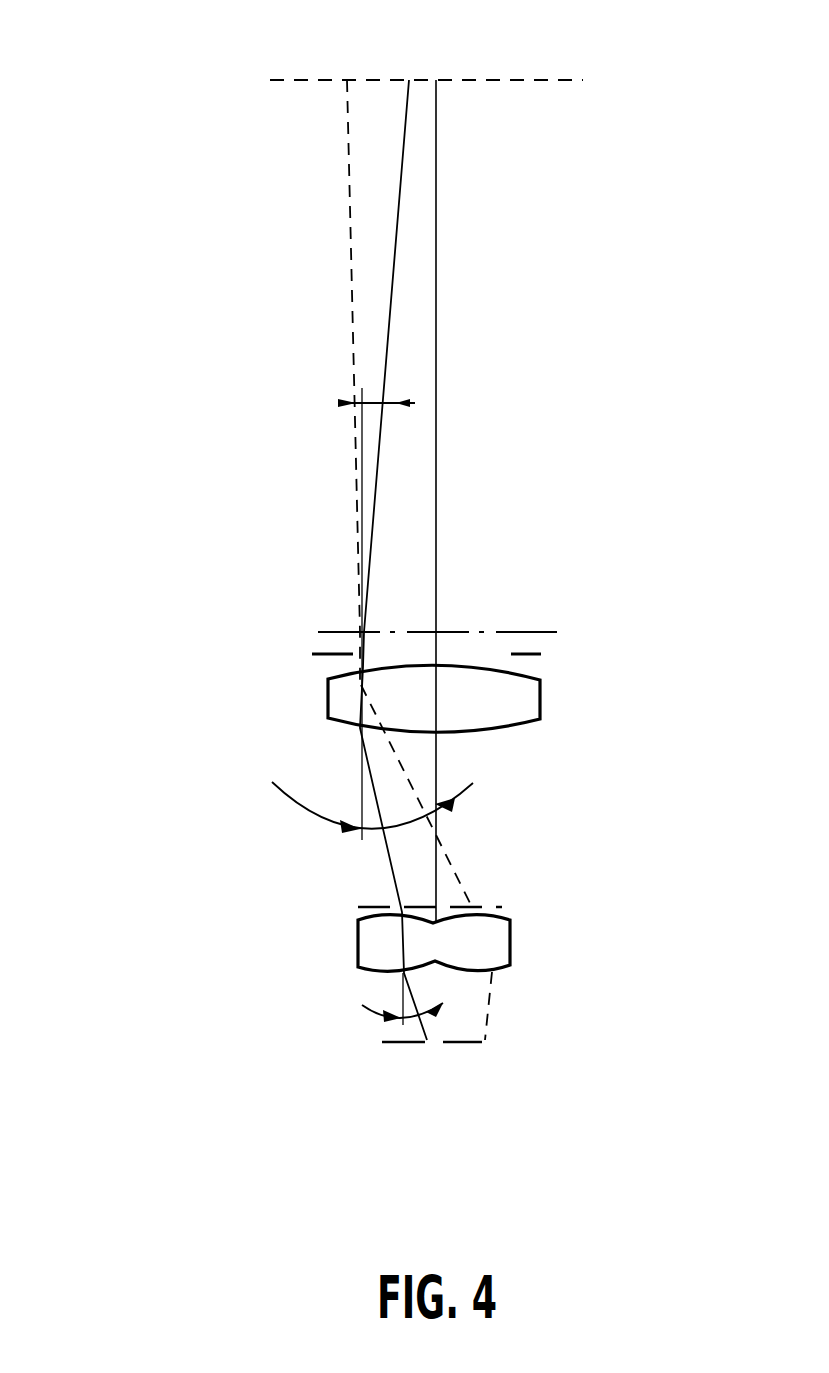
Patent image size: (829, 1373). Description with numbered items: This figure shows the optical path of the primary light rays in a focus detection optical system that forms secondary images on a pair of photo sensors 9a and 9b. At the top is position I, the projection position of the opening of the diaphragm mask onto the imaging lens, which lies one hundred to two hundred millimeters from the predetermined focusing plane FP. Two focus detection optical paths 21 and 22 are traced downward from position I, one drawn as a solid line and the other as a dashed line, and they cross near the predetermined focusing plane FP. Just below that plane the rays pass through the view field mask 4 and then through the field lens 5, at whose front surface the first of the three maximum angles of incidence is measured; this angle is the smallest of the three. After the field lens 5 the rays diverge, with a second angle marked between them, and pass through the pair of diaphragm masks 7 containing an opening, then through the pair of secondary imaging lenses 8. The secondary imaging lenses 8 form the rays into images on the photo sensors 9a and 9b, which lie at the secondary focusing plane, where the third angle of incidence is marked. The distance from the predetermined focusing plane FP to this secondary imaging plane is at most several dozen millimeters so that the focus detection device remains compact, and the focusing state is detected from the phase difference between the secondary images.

The projection position of the diaphragm mask opening I is at (563, 80).
The focus detection optical path 21 is at (396, 262).
The focus detection optical path 22 is at (347, 280).
The predetermined focusing plane FP is at (520, 632).
The view field mask 4 is at (541, 655).
The field lens 5 is at (541, 704).
The diaphragm mask 7 is at (502, 907).
The secondary imaging lens 8 is at (501, 942).
The photo sensor 9a is at (410, 1045).
The photo sensor 9b is at (462, 1045).